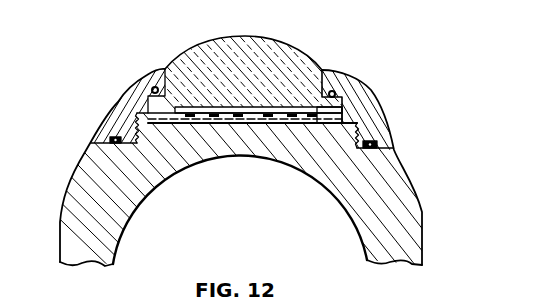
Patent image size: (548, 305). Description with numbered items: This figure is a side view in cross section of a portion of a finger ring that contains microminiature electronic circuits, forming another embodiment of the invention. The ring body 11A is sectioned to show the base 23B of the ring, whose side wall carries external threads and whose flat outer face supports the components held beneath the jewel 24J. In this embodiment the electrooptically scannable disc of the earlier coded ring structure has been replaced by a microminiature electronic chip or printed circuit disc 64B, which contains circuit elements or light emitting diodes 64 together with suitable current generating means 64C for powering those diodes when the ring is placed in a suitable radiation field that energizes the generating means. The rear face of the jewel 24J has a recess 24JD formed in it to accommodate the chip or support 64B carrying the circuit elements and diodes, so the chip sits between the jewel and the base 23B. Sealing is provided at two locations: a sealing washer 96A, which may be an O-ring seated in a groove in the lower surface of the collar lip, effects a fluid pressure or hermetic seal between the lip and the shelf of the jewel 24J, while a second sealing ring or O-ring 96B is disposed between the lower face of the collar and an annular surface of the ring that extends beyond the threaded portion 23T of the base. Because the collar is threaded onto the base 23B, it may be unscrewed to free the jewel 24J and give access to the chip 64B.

The body / housing ring 11A is at (423, 210).
The sealing washer 96A is at (152, 77).
The jewel 24J is at (277, 44).
The recess 24JD is at (208, 98).
The light emitting diodes 64 is at (323, 71).
The current generating means 64C is at (304, 110).
The microminiature electronic chip or printed circuit disc 64B is at (342, 113).
The plate top layer 23T is at (349, 120).
The base 23B is at (340, 136).
The second sealing ring or O-ring 96B is at (390, 149).